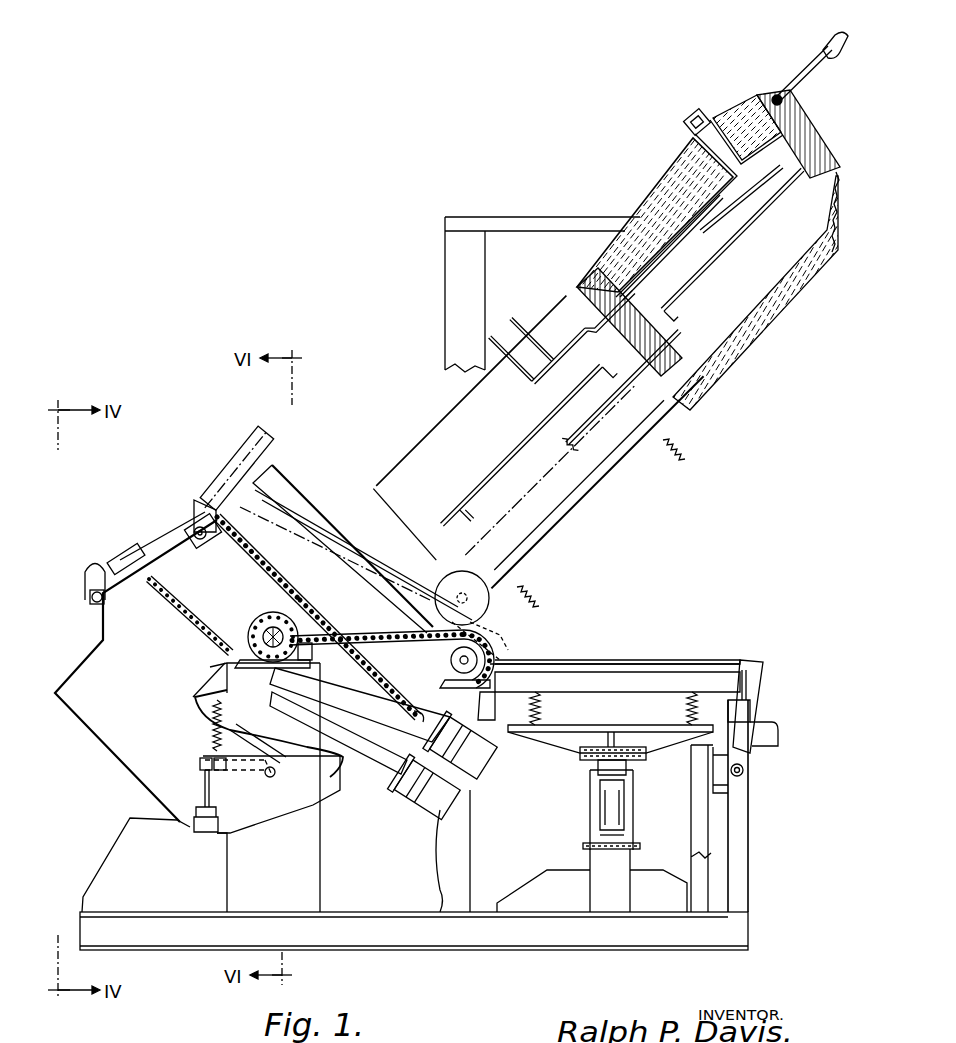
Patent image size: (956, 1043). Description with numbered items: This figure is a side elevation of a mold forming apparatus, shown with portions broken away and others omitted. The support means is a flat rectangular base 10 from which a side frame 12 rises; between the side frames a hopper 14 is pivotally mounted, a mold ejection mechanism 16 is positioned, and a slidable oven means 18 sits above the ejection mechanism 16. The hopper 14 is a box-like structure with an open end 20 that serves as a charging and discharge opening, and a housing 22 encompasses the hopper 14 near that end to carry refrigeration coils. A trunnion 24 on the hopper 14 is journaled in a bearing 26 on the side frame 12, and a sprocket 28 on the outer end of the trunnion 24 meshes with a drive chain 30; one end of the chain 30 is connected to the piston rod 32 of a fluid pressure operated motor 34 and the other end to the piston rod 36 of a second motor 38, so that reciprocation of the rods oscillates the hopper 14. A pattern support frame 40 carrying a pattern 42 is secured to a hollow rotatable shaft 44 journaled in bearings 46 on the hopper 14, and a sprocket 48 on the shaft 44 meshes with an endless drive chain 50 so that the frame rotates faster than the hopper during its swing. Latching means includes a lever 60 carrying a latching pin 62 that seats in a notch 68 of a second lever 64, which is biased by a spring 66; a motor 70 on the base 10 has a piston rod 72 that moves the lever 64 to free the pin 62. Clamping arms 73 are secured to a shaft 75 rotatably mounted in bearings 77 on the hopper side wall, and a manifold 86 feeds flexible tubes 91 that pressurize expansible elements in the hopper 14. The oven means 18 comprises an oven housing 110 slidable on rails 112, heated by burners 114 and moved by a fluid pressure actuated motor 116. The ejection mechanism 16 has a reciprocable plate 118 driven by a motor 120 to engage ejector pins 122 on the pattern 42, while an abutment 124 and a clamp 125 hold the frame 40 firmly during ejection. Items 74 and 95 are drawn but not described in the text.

The base 10 is at (552, 938).
The side frame 12 is at (112, 855).
The hopper 14 is at (90, 668).
The mold ejection mechanism 16 is at (580, 815).
The slidable oven means 18 is at (712, 265).
The open end 20 is at (295, 480).
The housing 22 is at (302, 505).
The trunnion 24 is at (240, 625).
The bearing 26 is at (215, 665).
The sprocket 28 is at (290, 612).
The drive chain 30 is at (345, 655).
The piston rod 32 is at (418, 712).
The fluid pressure operated motor 34 is at (478, 760).
The piston rod 36 is at (392, 760).
The fluid pressure operated motor 38 is at (390, 800).
The pattern support frame 40 is at (596, 500).
The pattern 42 is at (595, 660).
The hollow rotatable shaft 44 is at (484, 656).
The bearing 46 is at (530, 670).
The sprocket 48 is at (488, 612).
The endless drive chain 50 is at (378, 648).
The lever 60 is at (192, 700).
The latching pin 62 is at (265, 760).
The second lever 64 is at (312, 775).
The spring 66 is at (212, 740).
The notch 68 is at (262, 770).
The fluid pressure operated motor 70 is at (194, 825).
The piston rod 72 is at (200, 780).
The clamping arm 73 is at (238, 448).
The carriage 74 is at (118, 556).
The shaft 75 is at (190, 520).
The bearing 77 is at (193, 535).
The manifold 86 is at (86, 597).
The flexible tube 91 is at (88, 563).
The chain 95 is at (262, 620).
The oven housing 110 is at (690, 200).
The rails 112 is at (612, 425).
The burners 114 is at (672, 150).
The fluid pressure actuated motor 116 is at (815, 50).
The reciprocable plate 118 is at (626, 732).
The fluid pressure operated motor 120 is at (615, 808).
The ejector pin 122 is at (690, 452).
The abutment 124 is at (760, 672).
The clamp 125 is at (765, 690).